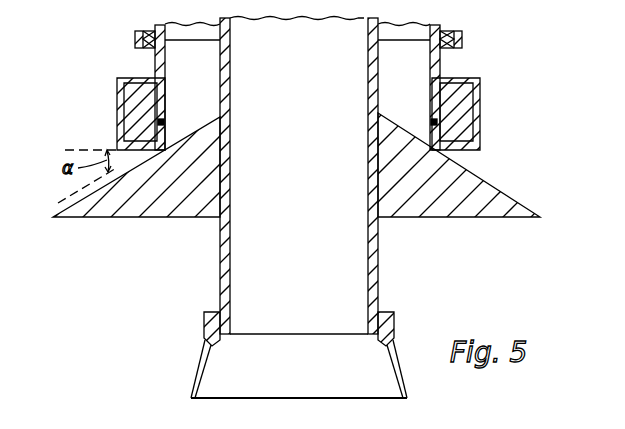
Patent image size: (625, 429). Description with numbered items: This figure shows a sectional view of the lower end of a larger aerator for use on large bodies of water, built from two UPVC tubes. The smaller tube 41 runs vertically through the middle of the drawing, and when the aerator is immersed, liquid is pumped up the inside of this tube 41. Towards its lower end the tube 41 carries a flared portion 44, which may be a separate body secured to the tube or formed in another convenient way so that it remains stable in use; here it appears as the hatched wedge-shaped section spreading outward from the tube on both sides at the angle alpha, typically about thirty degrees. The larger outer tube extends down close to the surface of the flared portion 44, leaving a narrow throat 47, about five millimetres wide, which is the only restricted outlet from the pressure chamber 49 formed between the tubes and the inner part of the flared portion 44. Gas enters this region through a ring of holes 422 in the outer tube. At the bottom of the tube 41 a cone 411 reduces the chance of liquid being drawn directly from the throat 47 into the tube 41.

The smaller tube 41 is at (225, 178).
The cone 411 is at (212, 367).
The flared portion 44 is at (163, 208).
The throat 47 is at (432, 148).
The pressure chamber 49 is at (168, 87).
The ring of holes 422 is at (208, 68).